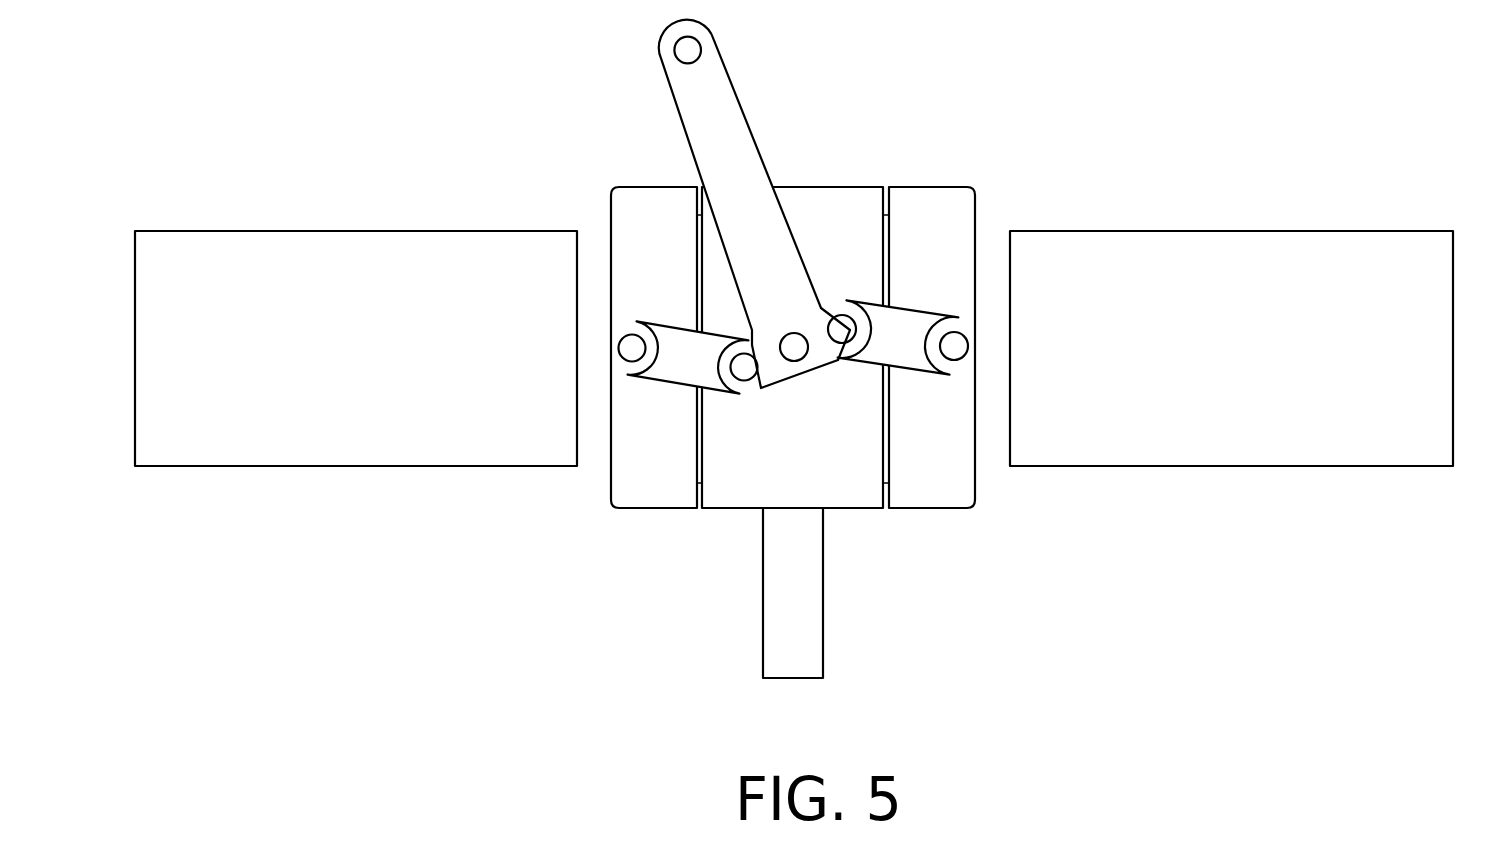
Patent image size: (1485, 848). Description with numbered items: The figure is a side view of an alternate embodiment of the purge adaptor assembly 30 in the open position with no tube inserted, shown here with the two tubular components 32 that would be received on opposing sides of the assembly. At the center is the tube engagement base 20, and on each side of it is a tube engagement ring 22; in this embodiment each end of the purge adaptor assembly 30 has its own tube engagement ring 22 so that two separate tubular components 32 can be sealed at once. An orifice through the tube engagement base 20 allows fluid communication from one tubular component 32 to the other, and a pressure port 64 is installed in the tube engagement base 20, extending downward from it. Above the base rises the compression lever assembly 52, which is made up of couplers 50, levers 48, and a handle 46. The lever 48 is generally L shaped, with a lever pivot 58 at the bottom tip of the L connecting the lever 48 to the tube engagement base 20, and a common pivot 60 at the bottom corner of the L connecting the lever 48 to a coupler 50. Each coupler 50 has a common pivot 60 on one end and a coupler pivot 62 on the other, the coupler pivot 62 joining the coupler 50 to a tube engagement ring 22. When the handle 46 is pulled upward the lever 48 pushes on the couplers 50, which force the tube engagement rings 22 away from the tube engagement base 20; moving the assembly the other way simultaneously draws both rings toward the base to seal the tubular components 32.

The tube engagement base 20 is at (746, 497).
The tube engagement ring 22 is at (640, 494).
The purge adaptor assembly 30 is at (794, 350).
The tubular component 32 is at (303, 250).
The handle 46 is at (686, 51).
The lever 48 is at (687, 125).
The coupler 50 is at (688, 343).
The compression lever assembly 52 is at (694, 204).
The lever pivot 58 is at (794, 350).
The common pivot 60 is at (843, 328).
The coupler pivot 62 is at (626, 349).
The pressure port 64 is at (810, 603).